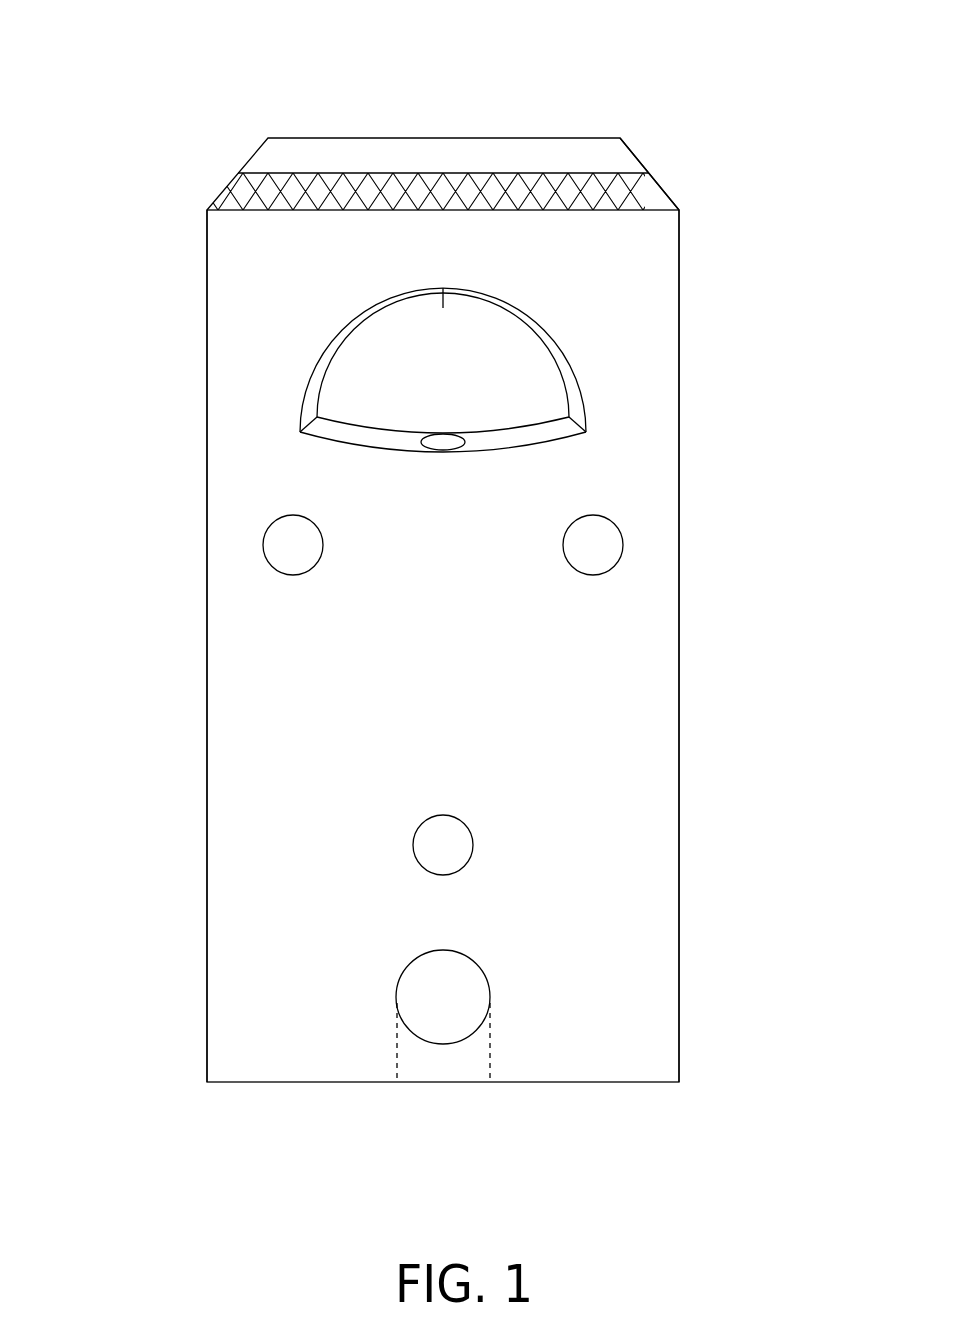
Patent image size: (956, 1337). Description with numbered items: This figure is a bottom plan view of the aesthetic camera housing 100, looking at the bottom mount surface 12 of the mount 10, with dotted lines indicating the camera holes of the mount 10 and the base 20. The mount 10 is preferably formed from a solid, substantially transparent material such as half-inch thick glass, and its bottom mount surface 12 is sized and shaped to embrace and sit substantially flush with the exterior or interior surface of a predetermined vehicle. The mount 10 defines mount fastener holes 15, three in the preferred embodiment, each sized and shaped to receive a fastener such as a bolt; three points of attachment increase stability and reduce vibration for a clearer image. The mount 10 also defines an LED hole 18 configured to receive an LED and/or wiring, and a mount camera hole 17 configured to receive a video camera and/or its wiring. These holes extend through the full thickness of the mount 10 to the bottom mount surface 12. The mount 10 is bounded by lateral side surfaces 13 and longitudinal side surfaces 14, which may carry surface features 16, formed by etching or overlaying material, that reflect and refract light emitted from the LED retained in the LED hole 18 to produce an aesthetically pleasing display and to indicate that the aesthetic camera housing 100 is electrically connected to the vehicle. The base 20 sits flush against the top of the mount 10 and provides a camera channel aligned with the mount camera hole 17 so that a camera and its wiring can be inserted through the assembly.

The aesthetic camera housing 100 is at (100, 67).
The mount 10 is at (685, 308).
The bottom mount surface 12 is at (637, 393).
The lateral side surface 13 is at (652, 193).
The longitudinal side surface 14 is at (207, 937).
The mount fastener holes 15 is at (623, 543).
The surface features 16 is at (437, 175).
The mount camera hole 17 is at (480, 1000).
The LED hole 18 is at (495, 348).
The base 20 is at (633, 157).